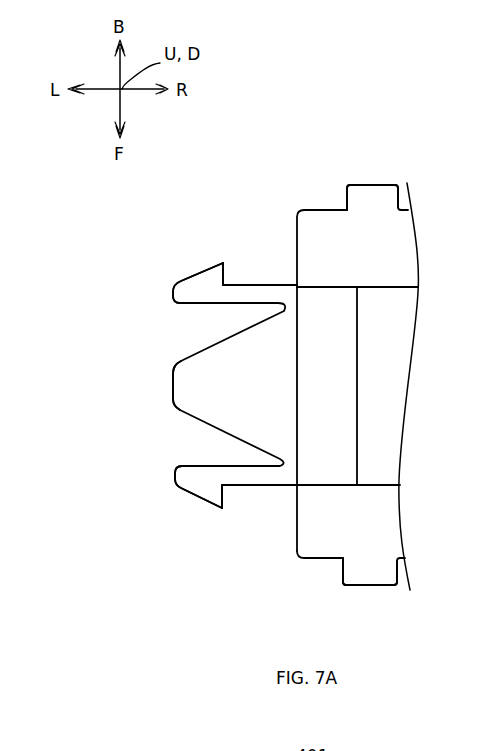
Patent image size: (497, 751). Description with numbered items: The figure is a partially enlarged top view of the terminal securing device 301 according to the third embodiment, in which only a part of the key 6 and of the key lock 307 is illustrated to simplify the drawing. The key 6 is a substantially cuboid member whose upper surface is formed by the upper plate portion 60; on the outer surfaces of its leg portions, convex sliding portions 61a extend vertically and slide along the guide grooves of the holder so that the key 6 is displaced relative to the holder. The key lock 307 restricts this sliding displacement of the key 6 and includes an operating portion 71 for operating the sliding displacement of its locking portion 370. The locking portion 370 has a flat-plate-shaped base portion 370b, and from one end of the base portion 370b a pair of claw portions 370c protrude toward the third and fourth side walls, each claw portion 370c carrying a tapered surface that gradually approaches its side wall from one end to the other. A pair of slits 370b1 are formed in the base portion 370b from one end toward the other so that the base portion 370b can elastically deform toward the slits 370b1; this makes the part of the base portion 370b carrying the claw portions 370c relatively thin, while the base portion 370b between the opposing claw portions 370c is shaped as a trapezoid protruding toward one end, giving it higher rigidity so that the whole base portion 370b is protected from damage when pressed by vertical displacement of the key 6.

The terminal securing device 301 is at (252, 100).
The key 6 is at (290, 194).
The upper plate portion 60 is at (405, 272).
The sliding portion 61a is at (372, 196).
The operating portion 71 is at (393, 378).
The key lock 307 is at (222, 211).
The locking portion 370 is at (168, 406).
The base portion 370b is at (262, 295).
The slit 370b1 is at (207, 347).
The claw portion 370c is at (192, 288).